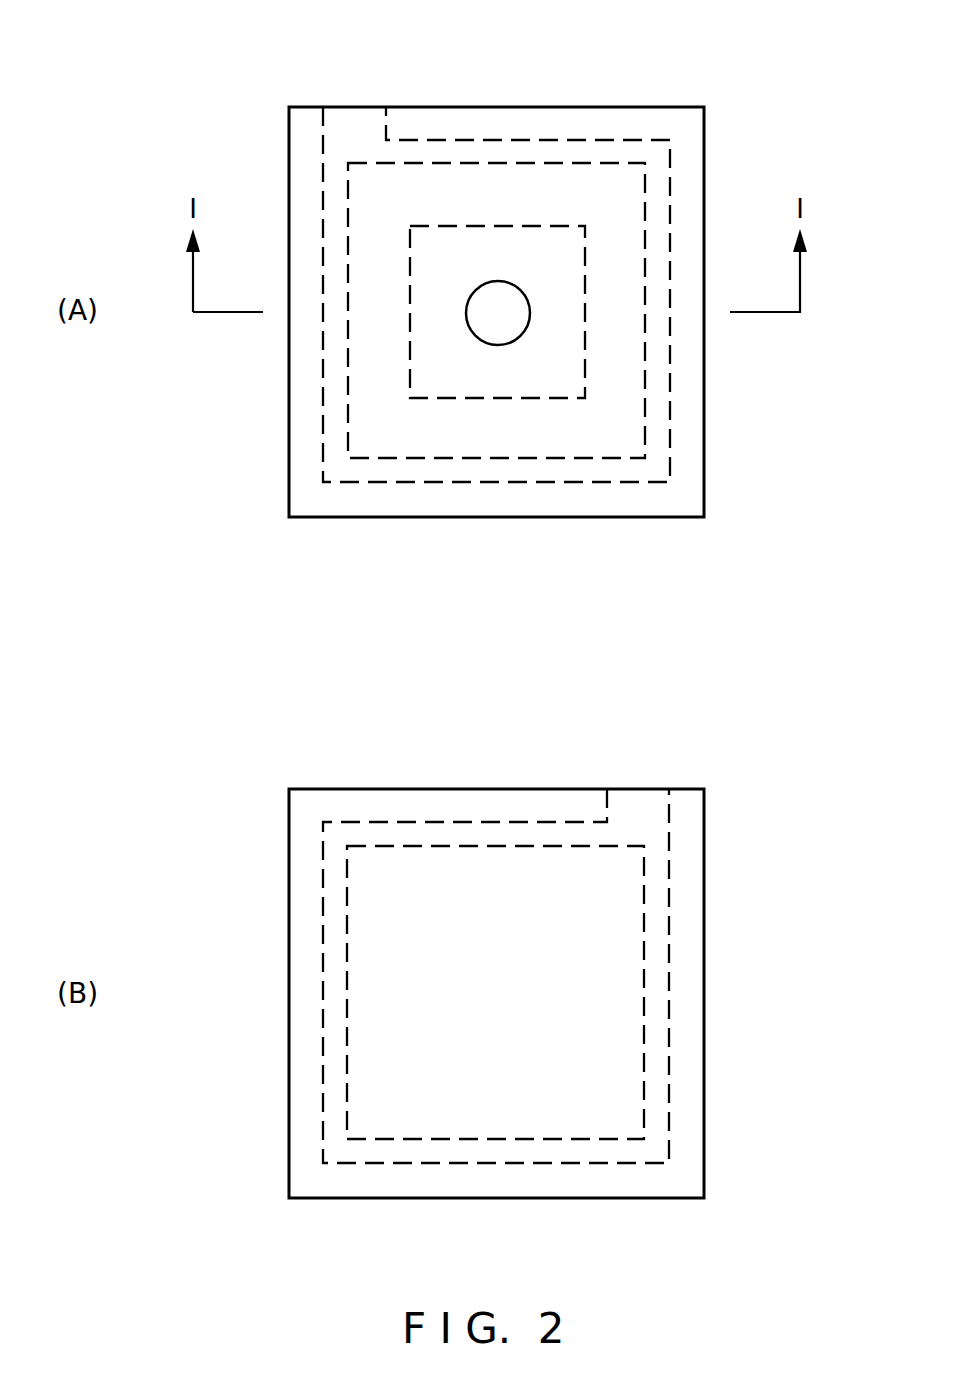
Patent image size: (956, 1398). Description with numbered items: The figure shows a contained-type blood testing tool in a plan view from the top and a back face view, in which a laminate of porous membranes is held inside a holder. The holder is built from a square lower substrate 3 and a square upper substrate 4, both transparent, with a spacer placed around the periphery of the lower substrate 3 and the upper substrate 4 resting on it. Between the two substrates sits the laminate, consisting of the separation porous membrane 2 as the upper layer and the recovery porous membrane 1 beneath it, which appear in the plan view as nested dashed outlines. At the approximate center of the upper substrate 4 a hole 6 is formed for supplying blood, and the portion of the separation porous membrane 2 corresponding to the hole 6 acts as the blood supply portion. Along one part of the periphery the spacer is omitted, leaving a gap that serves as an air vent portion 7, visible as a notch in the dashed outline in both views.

The recovery porous membrane 1 is at (516, 185).
The separation porous membrane 2 is at (497, 248).
The lower substrate 3 is at (686, 882).
The upper substrate 4 is at (657, 122).
The hole 6 is at (528, 326).
The air vent portion 7 is at (355, 118).